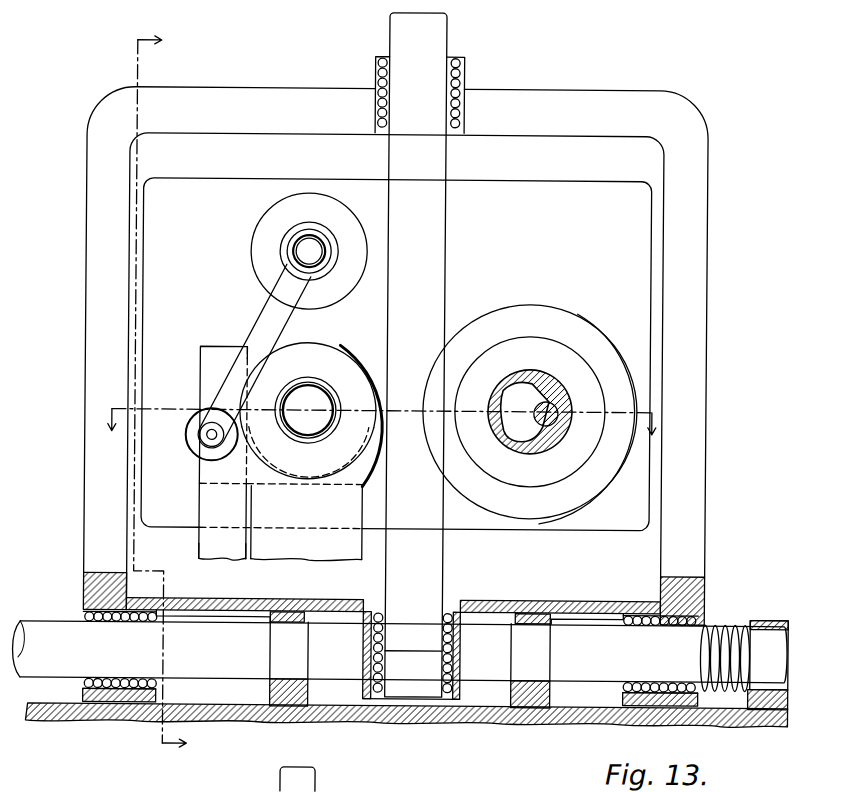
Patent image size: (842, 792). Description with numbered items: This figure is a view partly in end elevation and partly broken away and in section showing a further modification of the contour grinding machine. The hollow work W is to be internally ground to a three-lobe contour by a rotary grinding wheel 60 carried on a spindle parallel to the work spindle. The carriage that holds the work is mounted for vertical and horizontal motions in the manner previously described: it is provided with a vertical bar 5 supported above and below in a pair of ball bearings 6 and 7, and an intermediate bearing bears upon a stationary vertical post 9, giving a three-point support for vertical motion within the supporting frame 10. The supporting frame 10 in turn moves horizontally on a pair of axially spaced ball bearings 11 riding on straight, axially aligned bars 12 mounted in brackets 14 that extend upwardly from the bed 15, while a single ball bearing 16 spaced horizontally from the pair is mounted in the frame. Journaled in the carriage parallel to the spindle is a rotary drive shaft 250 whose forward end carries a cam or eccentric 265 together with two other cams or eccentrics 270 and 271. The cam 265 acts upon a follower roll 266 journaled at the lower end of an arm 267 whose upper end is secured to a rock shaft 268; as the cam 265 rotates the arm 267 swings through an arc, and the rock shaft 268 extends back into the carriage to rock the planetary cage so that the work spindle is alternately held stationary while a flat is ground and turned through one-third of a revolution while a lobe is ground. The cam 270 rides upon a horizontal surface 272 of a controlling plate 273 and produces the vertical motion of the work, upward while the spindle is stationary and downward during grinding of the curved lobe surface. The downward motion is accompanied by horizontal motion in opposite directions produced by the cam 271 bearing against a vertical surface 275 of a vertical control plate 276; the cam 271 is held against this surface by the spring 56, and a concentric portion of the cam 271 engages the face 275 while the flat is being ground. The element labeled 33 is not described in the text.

The vertical bar 5 is at (437, 46).
The ball bearing 6 is at (459, 80).
The ball bearing 7 is at (445, 670).
The stationary vertical post 9 is at (300, 779).
The supporting frame 10 is at (597, 102).
The ball bearings 11 is at (81, 682).
The straight bars 12 is at (46, 622).
The brackets 14 is at (292, 703).
The bed 15 is at (388, 420).
The single ball bearing 16 is at (162, 398).
The inner wall 33 is at (547, 193).
The spring 56 is at (722, 623).
The rotary grinding wheel 60 is at (557, 427).
The work W is at (548, 399).
The rotary drive shaft 250 is at (307, 394).
The cam 265 is at (296, 501).
The follower roll 266 is at (197, 419).
The arm 267 is at (264, 314).
The rock shaft 268 is at (310, 245).
The cam 270 is at (390, 358).
The cam 271 is at (345, 355).
The horizontal surface 272 is at (283, 455).
The controlling plate 273 is at (348, 522).
The vertical surface 275 is at (247, 488).
The vertical control plate 276 is at (214, 548).